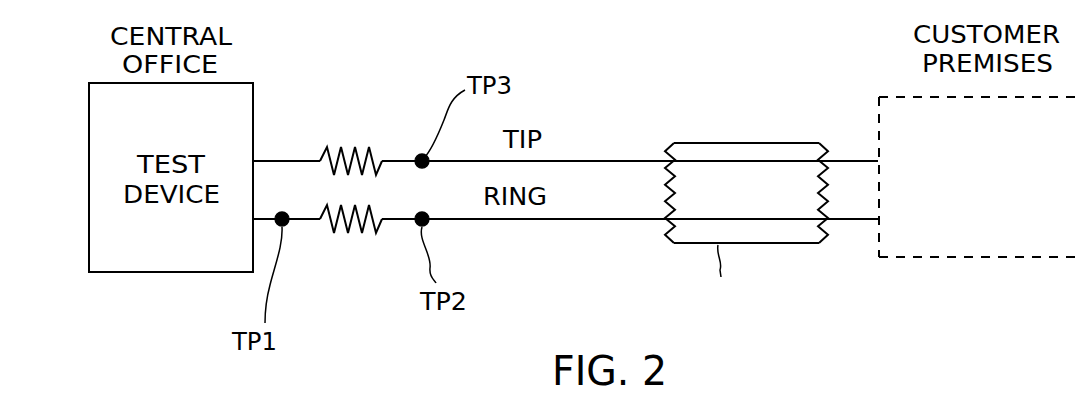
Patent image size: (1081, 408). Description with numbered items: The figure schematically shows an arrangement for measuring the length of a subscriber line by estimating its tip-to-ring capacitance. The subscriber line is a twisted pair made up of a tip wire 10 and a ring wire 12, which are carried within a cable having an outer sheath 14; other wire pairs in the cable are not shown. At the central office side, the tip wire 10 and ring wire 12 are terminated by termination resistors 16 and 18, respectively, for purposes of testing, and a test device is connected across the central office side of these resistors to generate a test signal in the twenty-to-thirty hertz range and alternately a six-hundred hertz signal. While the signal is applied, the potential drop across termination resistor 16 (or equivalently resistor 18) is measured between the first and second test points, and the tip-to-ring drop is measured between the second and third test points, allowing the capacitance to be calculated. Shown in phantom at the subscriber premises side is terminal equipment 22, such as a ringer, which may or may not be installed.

The tip wire 10 is at (612, 158).
The ring wire 12 is at (590, 221).
The outer sheath 14 is at (763, 142).
The termination resistor R1 16 is at (375, 237).
The termination resistor R2 18 is at (372, 148).
The terminal equipment 22 is at (987, 258).